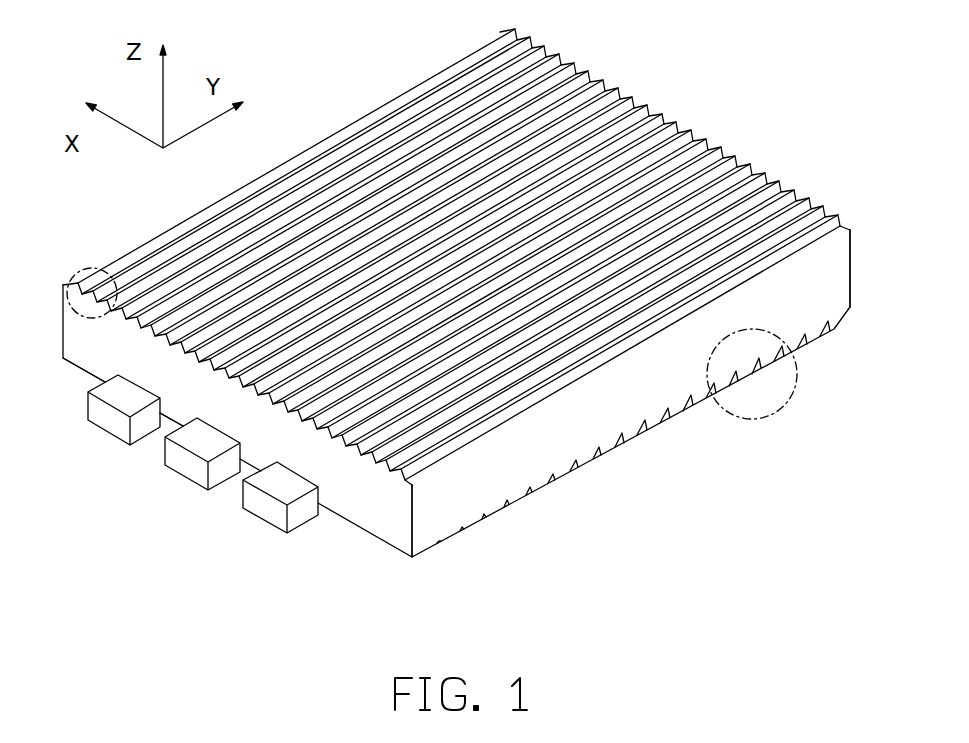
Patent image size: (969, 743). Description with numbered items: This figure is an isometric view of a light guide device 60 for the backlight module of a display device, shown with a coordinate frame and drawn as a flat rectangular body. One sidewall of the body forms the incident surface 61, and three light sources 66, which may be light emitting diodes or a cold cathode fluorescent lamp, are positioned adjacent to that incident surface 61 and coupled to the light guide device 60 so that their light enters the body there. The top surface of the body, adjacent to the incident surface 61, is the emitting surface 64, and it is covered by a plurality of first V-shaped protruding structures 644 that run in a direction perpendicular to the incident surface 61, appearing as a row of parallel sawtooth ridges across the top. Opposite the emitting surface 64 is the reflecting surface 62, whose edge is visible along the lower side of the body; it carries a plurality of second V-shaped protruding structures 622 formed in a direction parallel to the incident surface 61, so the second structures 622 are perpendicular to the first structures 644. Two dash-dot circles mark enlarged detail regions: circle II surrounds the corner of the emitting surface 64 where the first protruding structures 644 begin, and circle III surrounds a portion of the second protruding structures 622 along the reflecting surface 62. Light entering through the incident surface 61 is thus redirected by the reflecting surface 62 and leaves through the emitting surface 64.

The light guide device 60 is at (490, 527).
The incident surface 61 is at (376, 505).
The reflecting surface 62 is at (590, 440).
The second V-shaped protruding structures 622 is at (692, 398).
The emitting surface 64 is at (849, 231).
The first V-shaped protruding structures 644 is at (446, 91).
The light source 66 is at (262, 510).
The detail region II is at (85, 313).
The detail region III is at (839, 437).